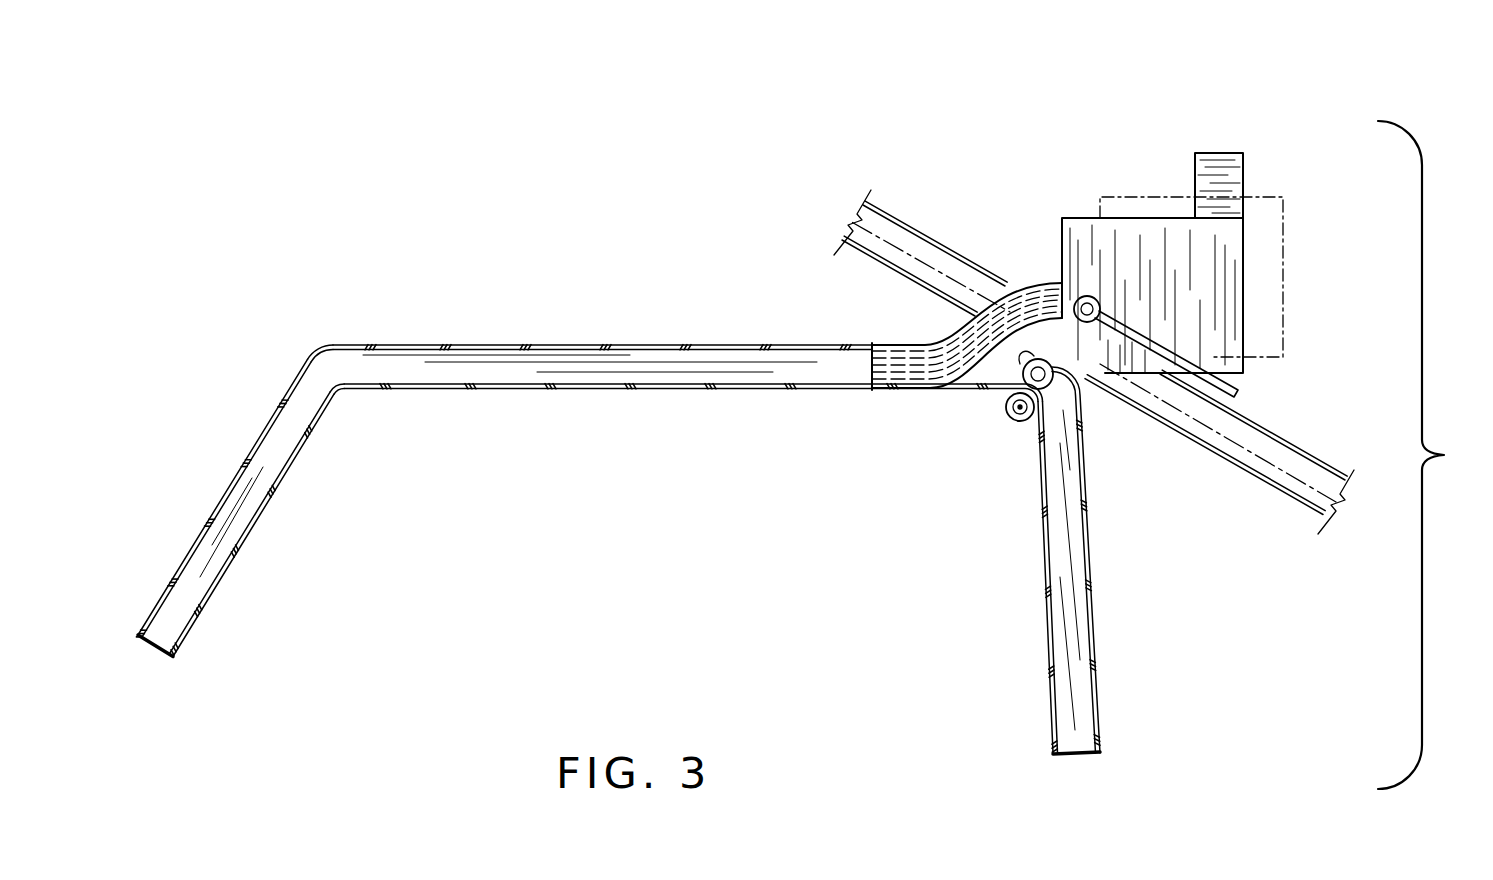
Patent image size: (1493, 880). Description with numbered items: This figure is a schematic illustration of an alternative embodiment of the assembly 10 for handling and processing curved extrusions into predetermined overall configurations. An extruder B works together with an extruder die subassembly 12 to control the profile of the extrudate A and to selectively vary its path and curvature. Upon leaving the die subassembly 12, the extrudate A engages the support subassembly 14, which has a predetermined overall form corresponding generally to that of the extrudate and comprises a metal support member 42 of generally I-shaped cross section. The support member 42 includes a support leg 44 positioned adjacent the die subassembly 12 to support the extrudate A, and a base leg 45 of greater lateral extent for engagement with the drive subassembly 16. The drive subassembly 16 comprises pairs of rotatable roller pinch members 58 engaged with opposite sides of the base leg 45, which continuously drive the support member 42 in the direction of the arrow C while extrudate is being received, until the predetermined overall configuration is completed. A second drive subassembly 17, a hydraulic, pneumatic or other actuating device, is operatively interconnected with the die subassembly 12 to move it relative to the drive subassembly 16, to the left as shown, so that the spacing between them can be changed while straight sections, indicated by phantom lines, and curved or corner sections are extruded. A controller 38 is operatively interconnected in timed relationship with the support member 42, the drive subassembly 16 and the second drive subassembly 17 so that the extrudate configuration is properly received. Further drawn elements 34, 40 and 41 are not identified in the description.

The assembly 10 is at (1430, 455).
The extruder die subassembly 12 is at (1068, 236).
The support subassembly 14 is at (216, 406).
The drive subassembly 16 is at (961, 458).
The second drive subassembly 17 is at (1222, 172).
The roller 34 is at (983, 470).
The controller 38 is at (1243, 327).
The guide rail / tube 40 is at (1247, 388).
The roller 41 is at (1103, 300).
The support member 42 is at (637, 345).
The support leg 44 is at (421, 345).
The base leg 45 is at (768, 390).
The rotatable roller pinch members 58 is at (1010, 420).
The extrudate A is at (916, 343).
The extruder B is at (1133, 180).
The arrow C is at (477, 406).